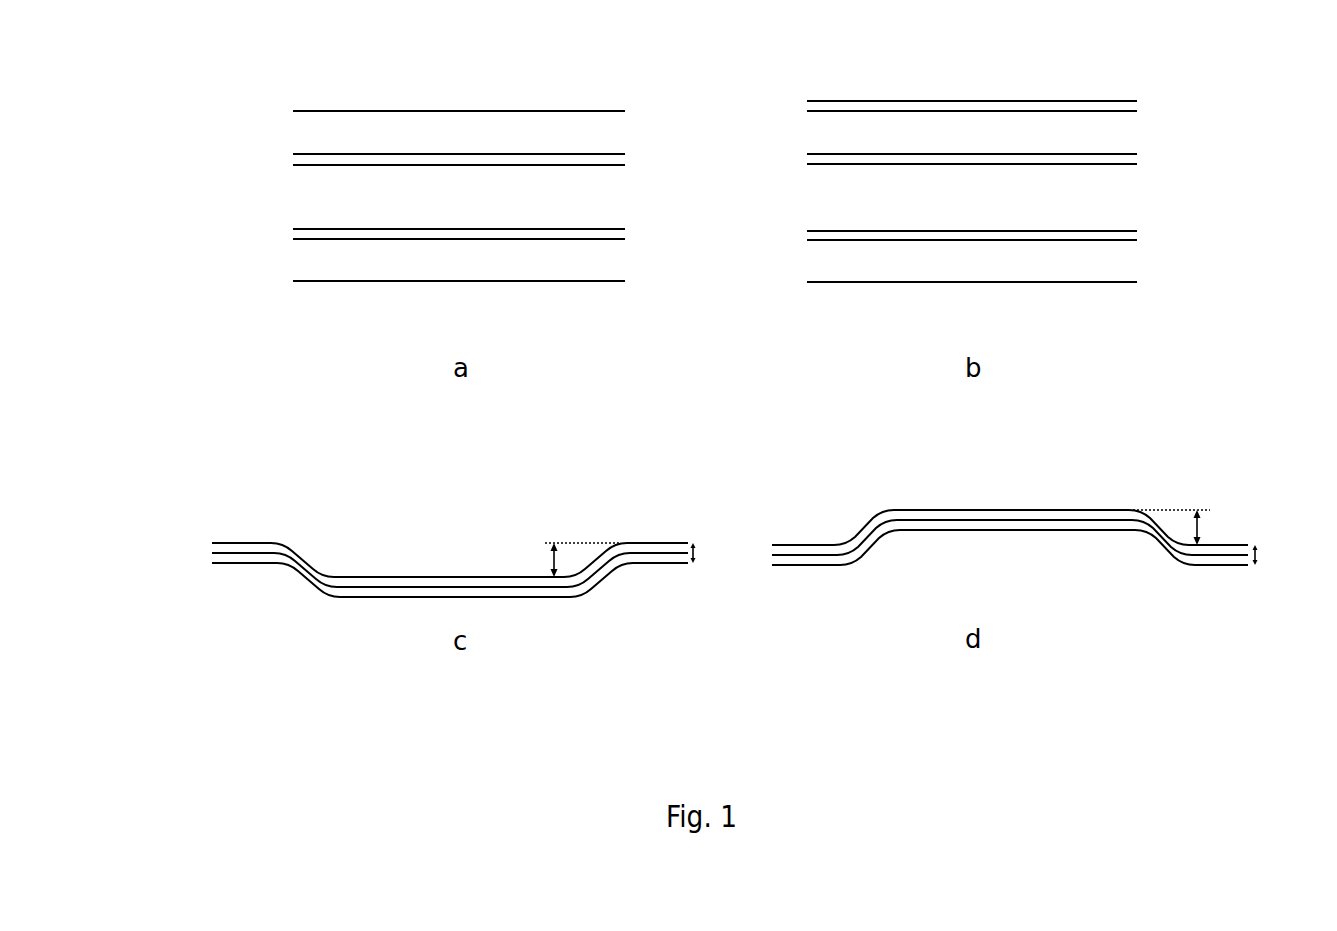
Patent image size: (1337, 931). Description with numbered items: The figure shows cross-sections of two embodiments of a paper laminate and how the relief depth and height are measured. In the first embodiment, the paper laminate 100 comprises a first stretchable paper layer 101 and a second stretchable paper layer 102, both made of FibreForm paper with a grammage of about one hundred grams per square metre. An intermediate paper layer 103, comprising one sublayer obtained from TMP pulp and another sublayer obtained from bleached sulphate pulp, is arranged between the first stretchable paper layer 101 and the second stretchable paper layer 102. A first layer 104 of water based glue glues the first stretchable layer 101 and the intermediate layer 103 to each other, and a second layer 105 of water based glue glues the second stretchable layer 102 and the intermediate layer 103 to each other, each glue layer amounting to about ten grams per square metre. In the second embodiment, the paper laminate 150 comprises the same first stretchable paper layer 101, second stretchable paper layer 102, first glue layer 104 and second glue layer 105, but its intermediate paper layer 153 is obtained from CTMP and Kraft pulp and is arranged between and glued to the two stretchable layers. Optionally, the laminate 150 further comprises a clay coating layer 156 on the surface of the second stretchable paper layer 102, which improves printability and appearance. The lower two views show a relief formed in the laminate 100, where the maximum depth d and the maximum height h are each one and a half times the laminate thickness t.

The paper laminate 100 is at (262, 88).
The first stretchable paper layer 101 is at (296, 264).
The second stretchable paper layer 102 is at (292, 132).
The intermediate paper layer 103 is at (300, 195).
The first layer of water based glue 104 is at (292, 231).
The second layer of water based glue 105 is at (292, 158).
The paper laminate 150 is at (1208, 127).
The intermediate paper layer 153 is at (1130, 198).
The clay coating layer 156 is at (1137, 102).